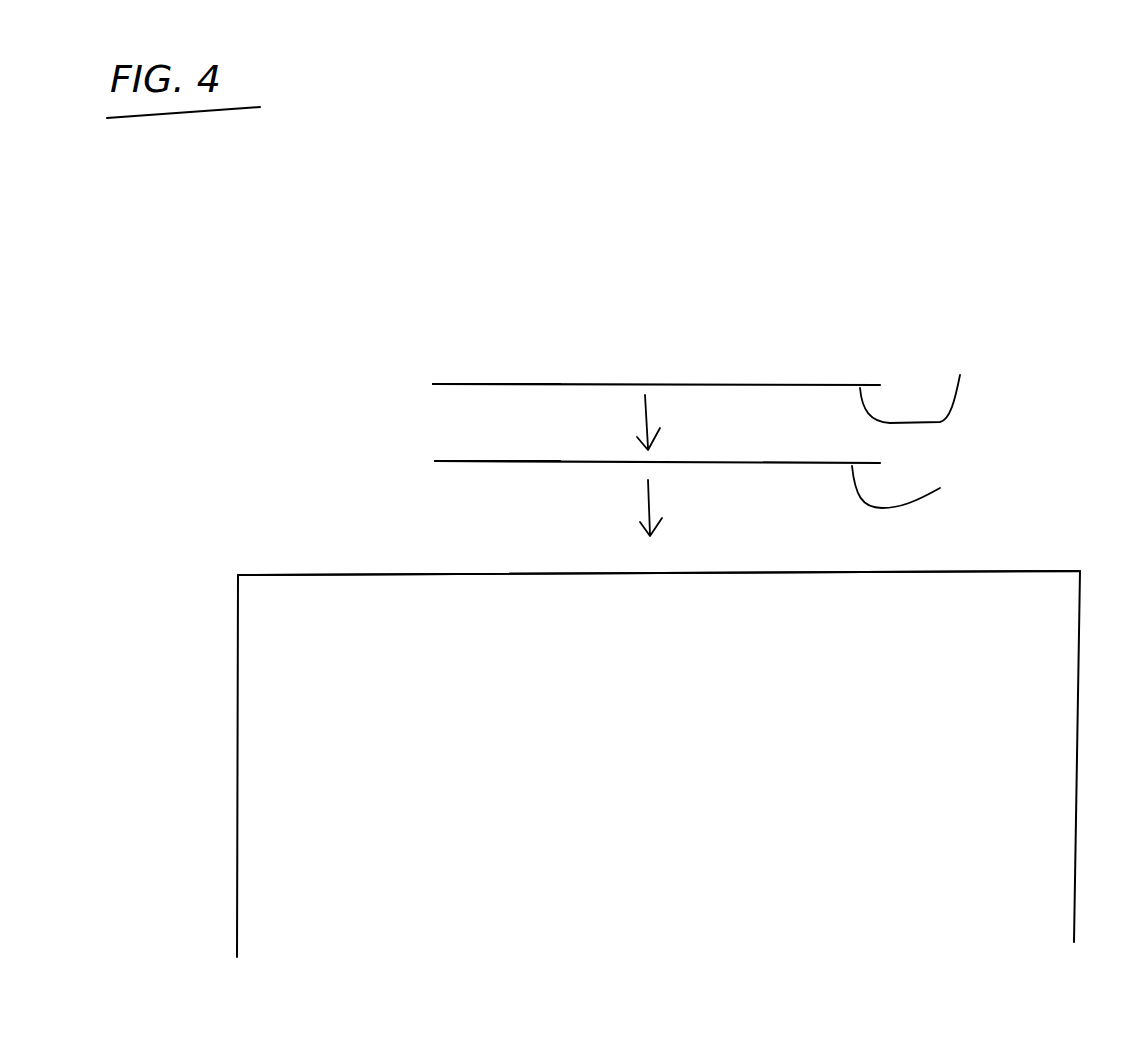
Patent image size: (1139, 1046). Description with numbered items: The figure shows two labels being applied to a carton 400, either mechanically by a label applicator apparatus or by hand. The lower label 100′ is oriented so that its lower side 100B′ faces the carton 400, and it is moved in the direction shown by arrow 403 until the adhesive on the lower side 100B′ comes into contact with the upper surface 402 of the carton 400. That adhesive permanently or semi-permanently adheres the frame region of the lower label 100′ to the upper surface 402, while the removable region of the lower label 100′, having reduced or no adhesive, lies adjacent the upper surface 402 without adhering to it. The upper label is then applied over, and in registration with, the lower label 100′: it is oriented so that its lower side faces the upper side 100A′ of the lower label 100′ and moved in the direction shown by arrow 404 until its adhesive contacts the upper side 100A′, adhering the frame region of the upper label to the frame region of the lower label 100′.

The lower label 100′ is at (450, 460).
The upper side of lower label 100A′ is at (500, 460).
The lower side of lower label 100B′ is at (931, 479).
The arrow 404 is at (655, 412).
The arrow 403 is at (650, 503).
The carton 400 is at (658, 764).
The upper surface of carton 402 is at (978, 575).